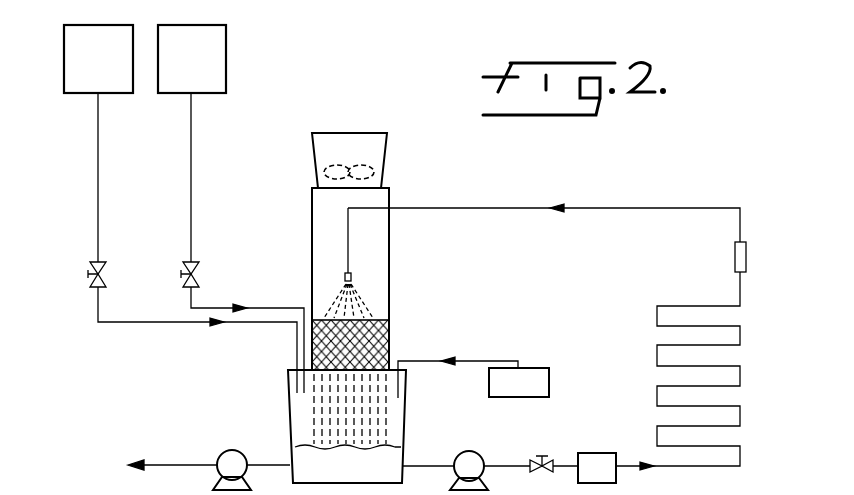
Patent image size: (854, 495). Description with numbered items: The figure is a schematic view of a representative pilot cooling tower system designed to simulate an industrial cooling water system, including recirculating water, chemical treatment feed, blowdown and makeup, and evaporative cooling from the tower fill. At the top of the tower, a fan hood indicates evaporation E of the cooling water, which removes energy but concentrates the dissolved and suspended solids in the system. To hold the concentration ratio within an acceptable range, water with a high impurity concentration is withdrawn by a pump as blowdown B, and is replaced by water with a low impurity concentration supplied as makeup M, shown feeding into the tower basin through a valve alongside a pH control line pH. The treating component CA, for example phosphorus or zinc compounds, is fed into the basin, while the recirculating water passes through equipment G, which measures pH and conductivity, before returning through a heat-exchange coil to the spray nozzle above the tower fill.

The makeup M is at (98, 59).
The element pH is at (192, 59).
The evaporation E is at (380, 156).
The treating component CA is at (519, 382).
The pH and conductivity measuring equipment G is at (597, 468).
The blowdown B is at (271, 463).